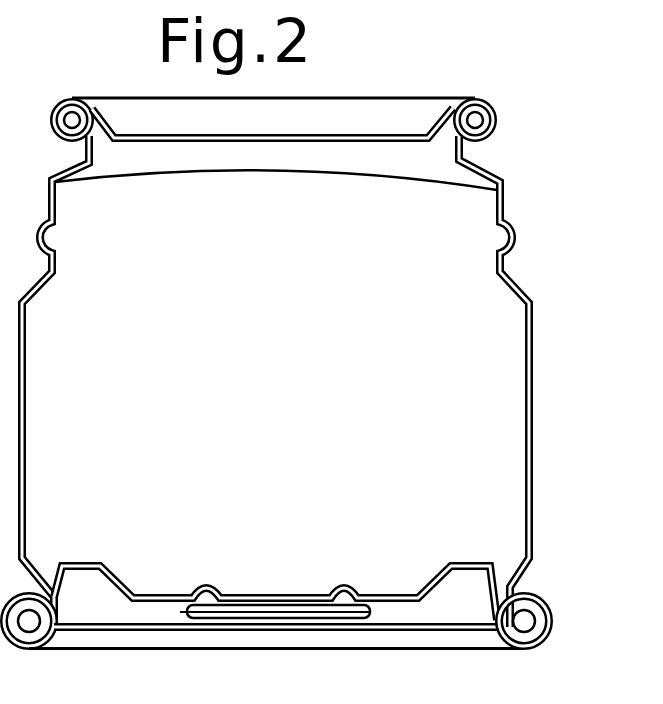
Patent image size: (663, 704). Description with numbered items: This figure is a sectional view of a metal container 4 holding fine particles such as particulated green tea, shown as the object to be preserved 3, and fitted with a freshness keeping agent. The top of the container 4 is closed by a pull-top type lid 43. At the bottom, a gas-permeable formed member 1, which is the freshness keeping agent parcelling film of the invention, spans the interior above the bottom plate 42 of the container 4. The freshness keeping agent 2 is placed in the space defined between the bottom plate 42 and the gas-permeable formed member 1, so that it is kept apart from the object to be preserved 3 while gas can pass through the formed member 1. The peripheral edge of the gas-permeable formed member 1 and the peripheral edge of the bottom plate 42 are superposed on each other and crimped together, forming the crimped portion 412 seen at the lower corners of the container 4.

The gas-permeable formed member 1 is at (463, 566).
The freshness keeping agent 2 is at (430, 616).
The object to be preserved 3 is at (462, 283).
The container 4 is at (533, 338).
The bottom plate 42 is at (468, 628).
The pull-top type lid 43 is at (415, 132).
The crimped portion 412 is at (552, 623).